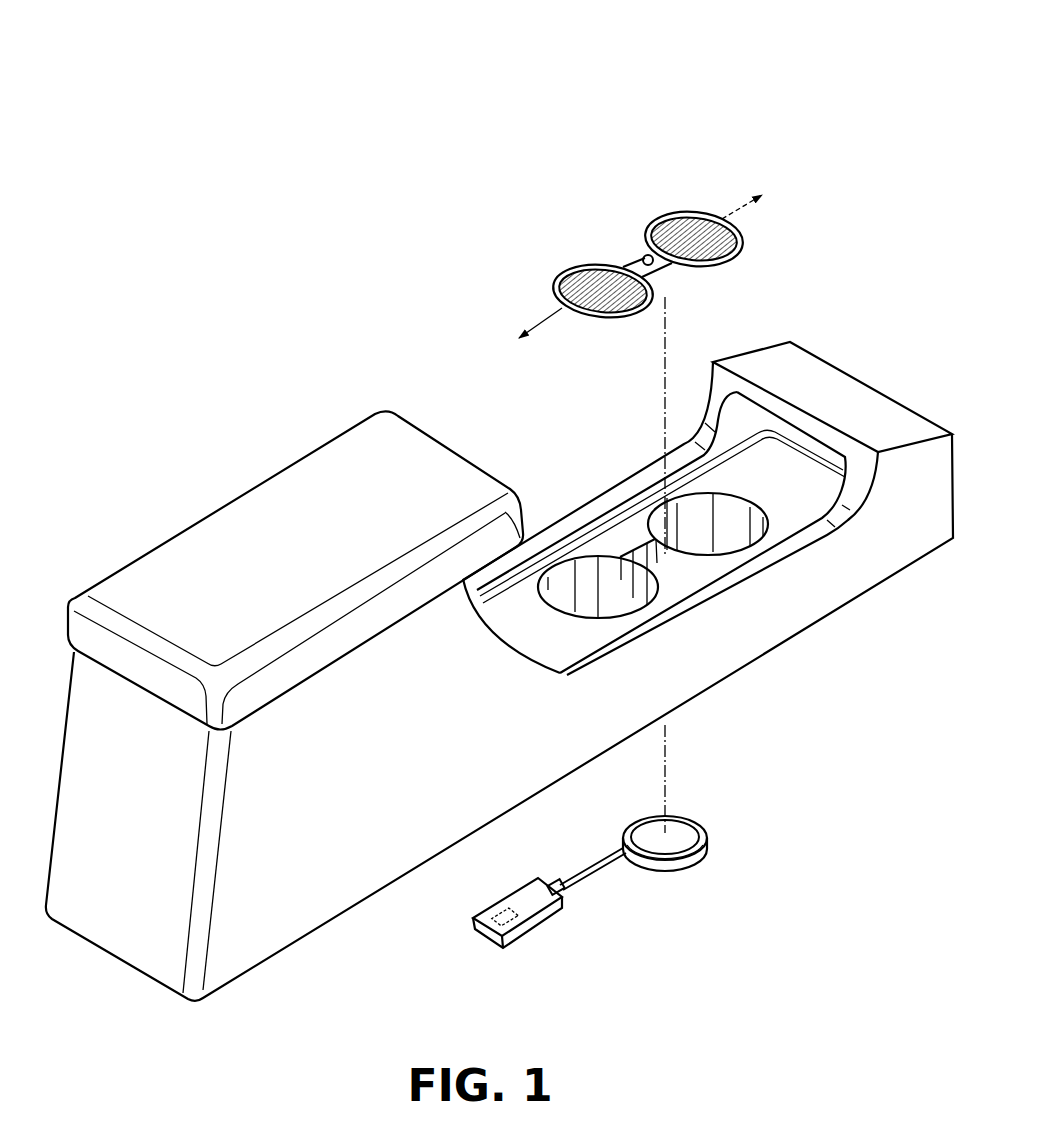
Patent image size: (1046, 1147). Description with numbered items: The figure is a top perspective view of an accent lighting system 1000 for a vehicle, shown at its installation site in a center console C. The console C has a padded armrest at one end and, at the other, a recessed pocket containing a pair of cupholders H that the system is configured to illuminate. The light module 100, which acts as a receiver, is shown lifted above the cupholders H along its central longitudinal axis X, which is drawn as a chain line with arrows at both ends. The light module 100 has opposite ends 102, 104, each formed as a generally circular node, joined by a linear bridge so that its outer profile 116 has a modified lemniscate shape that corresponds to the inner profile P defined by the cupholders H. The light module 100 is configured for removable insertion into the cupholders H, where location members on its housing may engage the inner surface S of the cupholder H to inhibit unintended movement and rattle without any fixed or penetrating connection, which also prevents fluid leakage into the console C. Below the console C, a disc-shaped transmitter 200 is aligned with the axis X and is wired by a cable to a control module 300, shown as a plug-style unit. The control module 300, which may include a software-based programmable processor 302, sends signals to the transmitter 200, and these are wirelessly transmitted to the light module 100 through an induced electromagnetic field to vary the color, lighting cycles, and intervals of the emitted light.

The accent lighting system 1000 is at (413, 82).
The light module 100 is at (712, 192).
The first end of light module 102 is at (546, 297).
The second end of light module 104 is at (757, 235).
The outer profile 116 is at (623, 257).
The transmitter 200 is at (673, 884).
The control module 300 is at (472, 949).
The programmable processor 302 is at (527, 923).
The console C is at (767, 682).
The cupholder H is at (627, 530).
The inner profile P is at (652, 556).
The inner surface S is at (603, 592).
The central longitudinal axis X is at (557, 318).